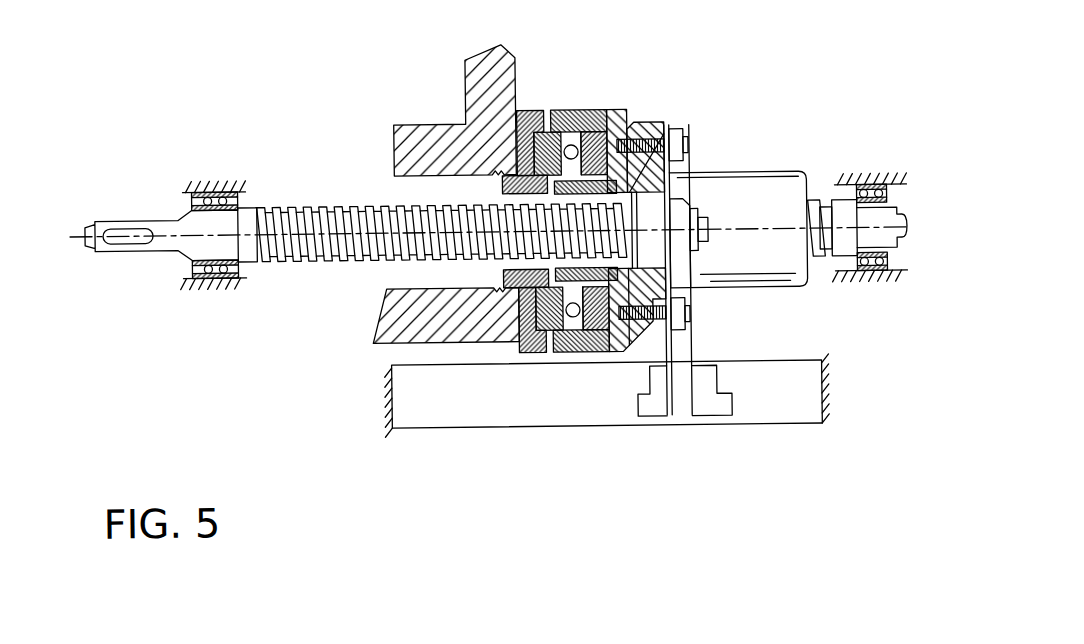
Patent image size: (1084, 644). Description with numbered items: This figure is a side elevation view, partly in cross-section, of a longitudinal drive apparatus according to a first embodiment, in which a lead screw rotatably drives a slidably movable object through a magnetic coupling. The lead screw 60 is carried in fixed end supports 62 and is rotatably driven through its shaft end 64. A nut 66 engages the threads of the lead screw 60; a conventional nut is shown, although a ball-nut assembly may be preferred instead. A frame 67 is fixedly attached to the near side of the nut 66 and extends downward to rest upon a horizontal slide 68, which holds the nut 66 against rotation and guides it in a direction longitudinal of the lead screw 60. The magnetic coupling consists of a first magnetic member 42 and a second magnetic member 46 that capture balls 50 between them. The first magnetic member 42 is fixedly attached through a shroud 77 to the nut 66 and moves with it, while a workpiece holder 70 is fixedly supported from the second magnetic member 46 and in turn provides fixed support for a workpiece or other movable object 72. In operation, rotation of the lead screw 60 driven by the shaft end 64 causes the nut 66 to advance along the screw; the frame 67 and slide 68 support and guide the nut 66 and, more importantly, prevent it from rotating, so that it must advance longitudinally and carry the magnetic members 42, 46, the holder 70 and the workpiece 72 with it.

The first magnetic member 42 is at (620, 113).
The second magnetic member 46 is at (546, 135).
The balls 50 is at (572, 145).
The lead screw 60 is at (818, 203).
The fixed end supports 62 is at (242, 190).
The shaft end 64 is at (118, 216).
The nut 66 is at (686, 130).
The frame 67 is at (692, 346).
The horizontal slide 68 is at (767, 409).
The workpiece holder 70 is at (535, 344).
The workpiece 72 is at (476, 92).
The shroud 77 is at (590, 108).